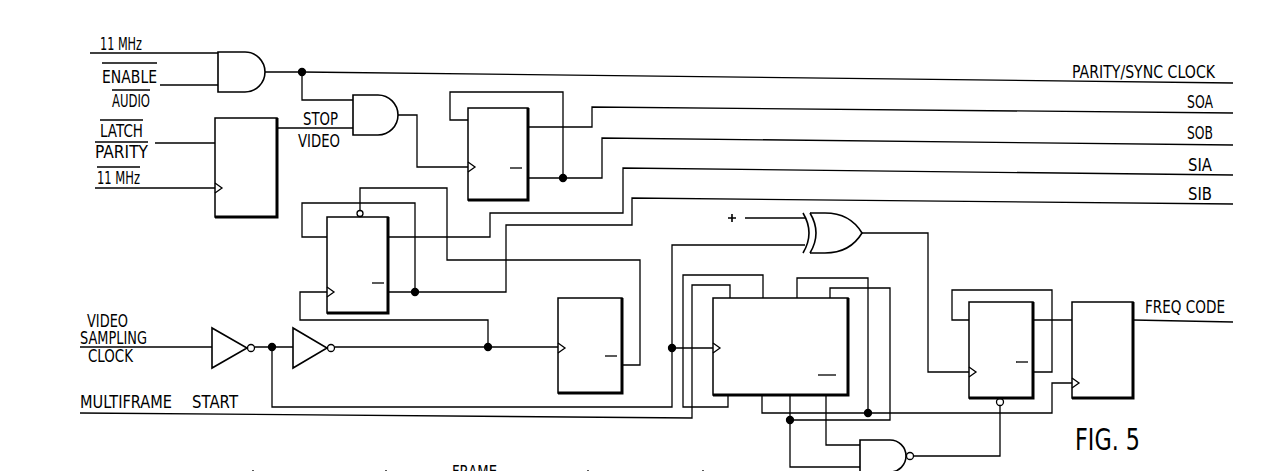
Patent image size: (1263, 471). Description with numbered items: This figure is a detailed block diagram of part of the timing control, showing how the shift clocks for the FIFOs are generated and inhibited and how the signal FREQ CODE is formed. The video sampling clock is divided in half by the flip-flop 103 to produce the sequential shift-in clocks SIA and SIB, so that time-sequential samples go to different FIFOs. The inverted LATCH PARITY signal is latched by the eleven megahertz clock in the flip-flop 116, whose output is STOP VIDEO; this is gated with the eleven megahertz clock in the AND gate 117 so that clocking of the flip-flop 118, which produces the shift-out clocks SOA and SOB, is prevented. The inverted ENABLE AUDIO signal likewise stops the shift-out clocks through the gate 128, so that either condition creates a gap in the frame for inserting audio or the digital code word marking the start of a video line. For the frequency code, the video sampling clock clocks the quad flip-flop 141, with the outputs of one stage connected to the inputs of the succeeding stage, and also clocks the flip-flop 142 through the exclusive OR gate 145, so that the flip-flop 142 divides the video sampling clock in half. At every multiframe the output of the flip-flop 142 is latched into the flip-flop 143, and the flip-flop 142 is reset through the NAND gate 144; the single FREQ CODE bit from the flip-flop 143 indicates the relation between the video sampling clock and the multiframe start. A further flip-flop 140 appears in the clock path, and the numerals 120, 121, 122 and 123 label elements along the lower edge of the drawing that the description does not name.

The flip-flop 103 is at (327, 274).
The flip-flop 116 is at (277, 186).
The AND gate 117 is at (383, 97).
The flip-flop 118 is at (468, 144).
The frame signal 120 is at (255, 470).
The frame signal 121 is at (385, 470).
The frame signal 122 is at (588, 470).
The frame signal 123 is at (703, 470).
The gate 128 is at (257, 66).
The flip-flop 140 is at (558, 376).
The quad flip-flop 141 is at (750, 398).
The flip-flop 142 is at (969, 353).
The flip-flop 143 is at (1133, 350).
The NAND gate 144 is at (905, 442).
The exclusive OR gate 145 is at (863, 212).